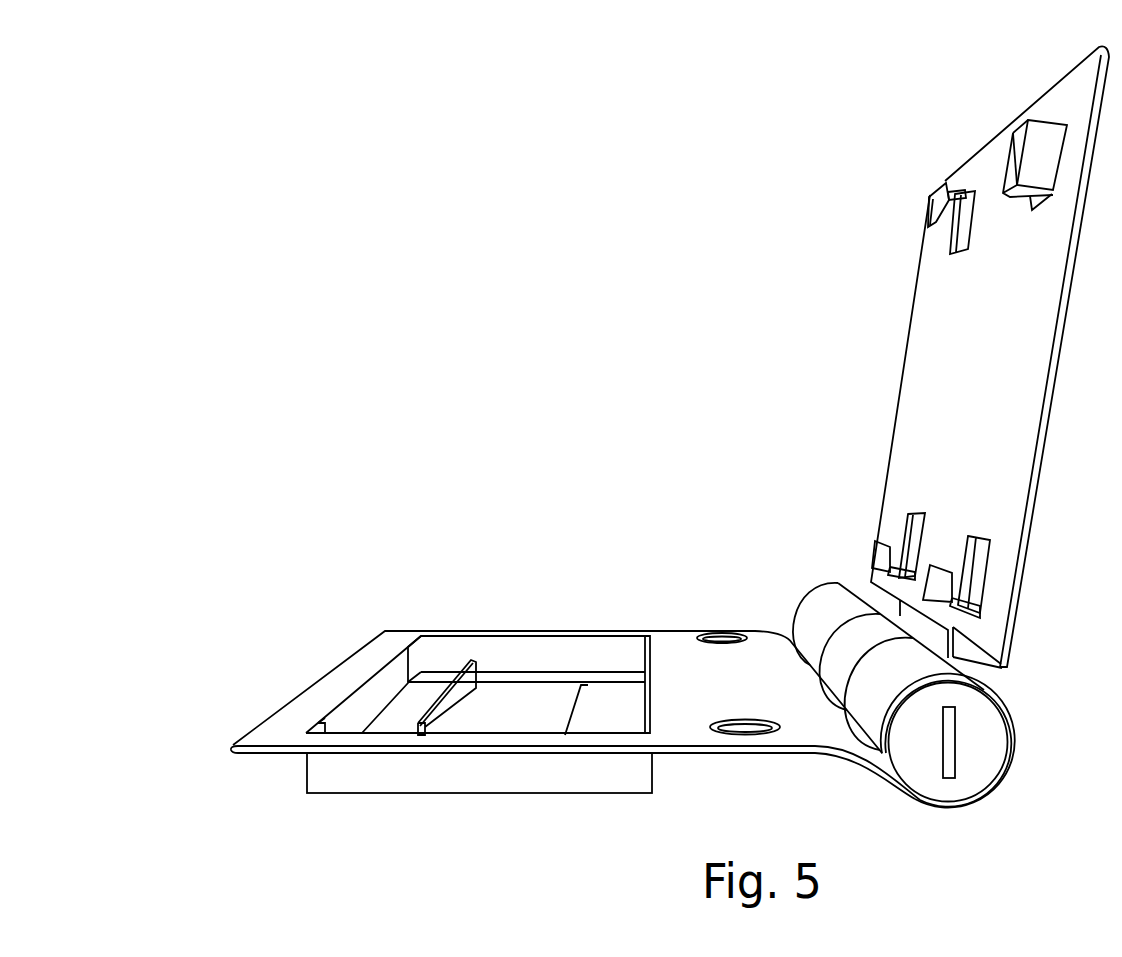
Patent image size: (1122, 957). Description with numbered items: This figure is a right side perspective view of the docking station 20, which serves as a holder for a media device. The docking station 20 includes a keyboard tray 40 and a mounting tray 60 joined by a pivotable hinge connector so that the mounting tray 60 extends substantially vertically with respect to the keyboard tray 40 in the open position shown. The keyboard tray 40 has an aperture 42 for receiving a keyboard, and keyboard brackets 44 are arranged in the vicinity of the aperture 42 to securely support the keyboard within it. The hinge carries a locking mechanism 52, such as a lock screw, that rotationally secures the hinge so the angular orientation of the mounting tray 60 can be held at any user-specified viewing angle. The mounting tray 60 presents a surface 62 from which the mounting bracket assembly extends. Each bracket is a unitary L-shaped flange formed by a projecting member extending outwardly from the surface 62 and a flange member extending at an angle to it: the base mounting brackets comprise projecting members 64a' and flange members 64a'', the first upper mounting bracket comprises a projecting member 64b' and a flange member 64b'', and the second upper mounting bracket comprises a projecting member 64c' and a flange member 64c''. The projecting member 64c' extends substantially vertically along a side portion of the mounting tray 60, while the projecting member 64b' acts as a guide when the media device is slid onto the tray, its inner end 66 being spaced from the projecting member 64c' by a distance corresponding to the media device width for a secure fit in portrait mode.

The docking station 20 is at (672, 124).
The keyboard tray 40 is at (398, 632).
The aperture 42 is at (456, 633).
The keyboard brackets 44 is at (621, 702).
The locking mechanism 52 is at (957, 742).
The mounting tray 60 is at (924, 382).
The surface 62 is at (990, 354).
The projecting member 64a' is at (933, 580).
The flange member 64a'' is at (952, 523).
The projecting member 64b' is at (916, 155).
The flange member 64b'' is at (892, 196).
The projecting member 64c' is at (1035, 124).
The flange member 64c'' is at (983, 117).
The inner end 66 is at (962, 196).